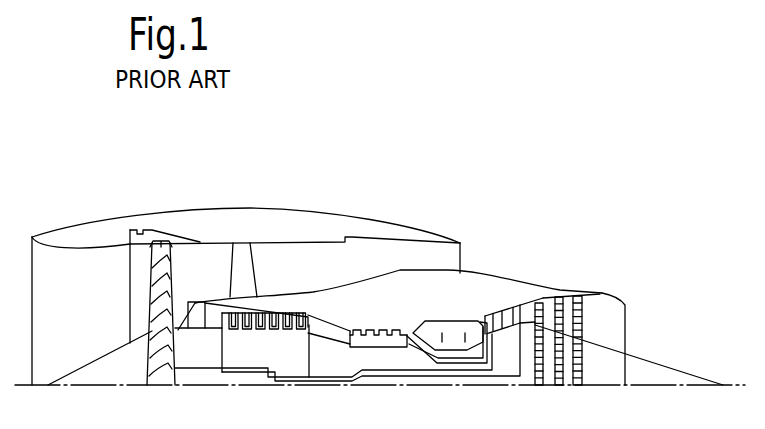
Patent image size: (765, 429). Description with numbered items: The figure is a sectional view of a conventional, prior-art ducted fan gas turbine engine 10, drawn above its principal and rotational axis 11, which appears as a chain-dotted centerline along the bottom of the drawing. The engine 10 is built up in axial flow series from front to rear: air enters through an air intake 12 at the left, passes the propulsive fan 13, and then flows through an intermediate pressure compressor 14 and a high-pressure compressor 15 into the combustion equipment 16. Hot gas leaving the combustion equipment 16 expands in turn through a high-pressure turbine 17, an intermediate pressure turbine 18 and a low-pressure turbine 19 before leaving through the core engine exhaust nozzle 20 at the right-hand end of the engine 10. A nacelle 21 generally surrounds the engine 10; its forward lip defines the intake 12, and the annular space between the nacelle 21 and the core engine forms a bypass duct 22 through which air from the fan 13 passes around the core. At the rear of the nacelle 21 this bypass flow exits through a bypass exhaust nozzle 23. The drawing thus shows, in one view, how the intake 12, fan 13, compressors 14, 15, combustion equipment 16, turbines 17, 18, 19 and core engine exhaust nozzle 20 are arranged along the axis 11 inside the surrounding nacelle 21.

The ducted fan gas turbine engine 10 is at (566, 172).
The principal and rotational axis 11 is at (42, 383).
The air intake 12 is at (53, 250).
The propulsive fan 13 is at (157, 241).
The intermediate pressure compressor 14 is at (270, 313).
The high-pressure compressor 15 is at (368, 330).
The combustion equipment 16 is at (432, 328).
The high-pressure turbine 17 is at (485, 312).
The intermediate pressure turbine 18 is at (521, 308).
The low-pressure turbine 19 is at (560, 297).
The core engine exhaust nozzle 20 is at (612, 308).
The nacelle 21 is at (103, 227).
The bypass duct 22 is at (305, 258).
The bypass exhaust nozzle 23 is at (460, 242).